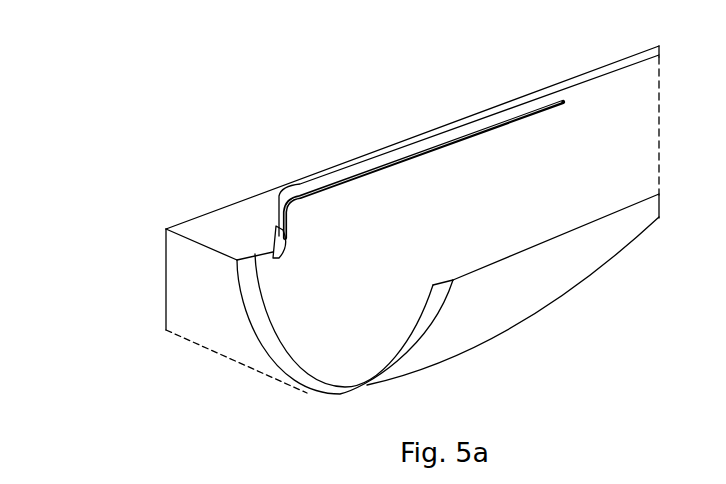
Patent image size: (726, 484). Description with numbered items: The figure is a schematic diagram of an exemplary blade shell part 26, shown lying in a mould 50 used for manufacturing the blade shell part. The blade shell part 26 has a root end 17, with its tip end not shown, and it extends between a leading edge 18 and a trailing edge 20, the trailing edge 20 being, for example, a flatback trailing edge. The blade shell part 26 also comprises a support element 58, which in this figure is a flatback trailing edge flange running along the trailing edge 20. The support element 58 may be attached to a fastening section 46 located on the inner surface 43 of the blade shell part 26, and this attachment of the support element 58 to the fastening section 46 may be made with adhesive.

The root end 17 is at (283, 374).
The leading edge 18 is at (547, 288).
The trailing edge 20 is at (488, 114).
The second blade shell part 26 is at (396, 116).
The inner surface 43 is at (600, 208).
The fastening section 46 is at (413, 153).
The mould 50 is at (213, 293).
The support element 58 is at (273, 238).